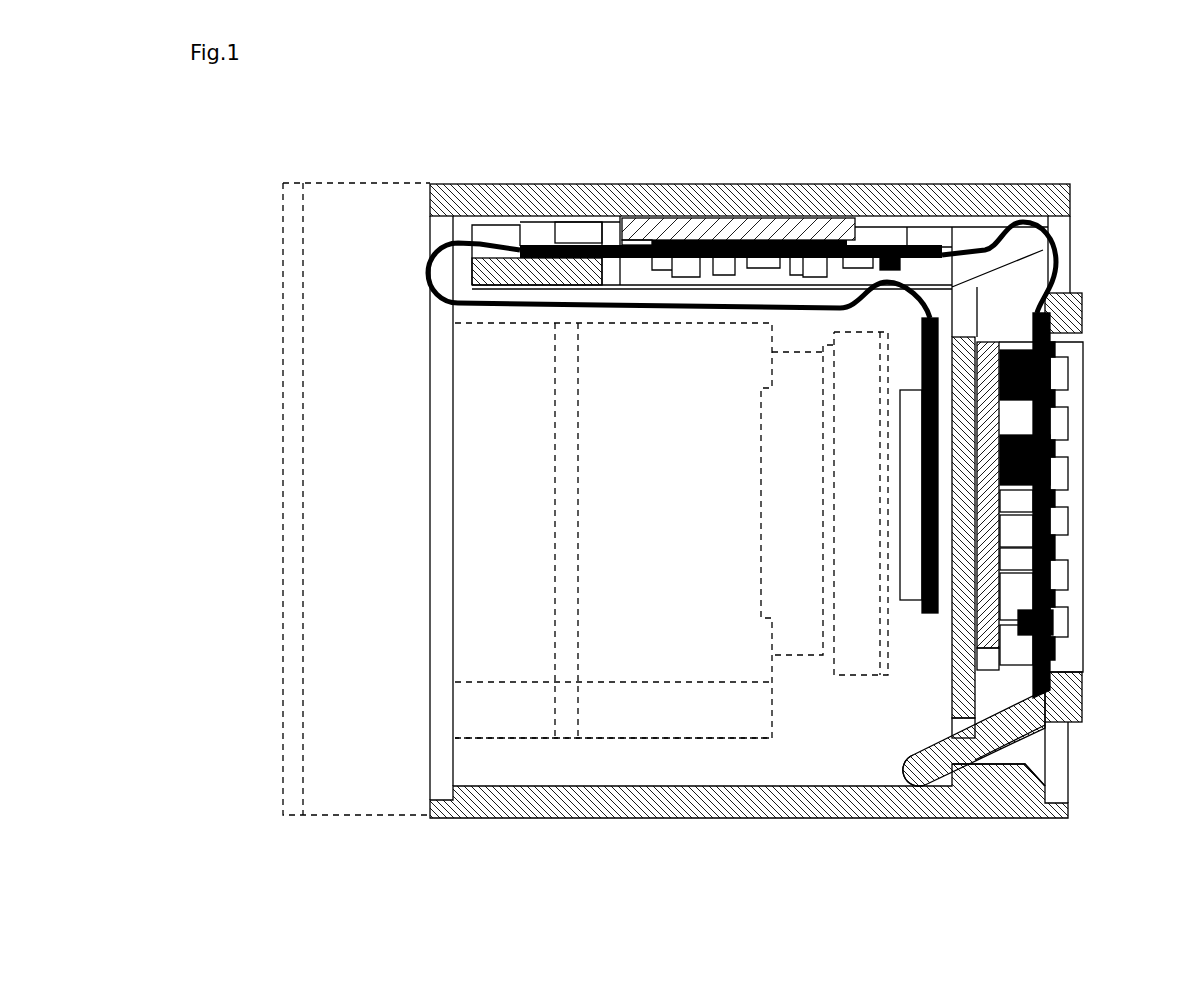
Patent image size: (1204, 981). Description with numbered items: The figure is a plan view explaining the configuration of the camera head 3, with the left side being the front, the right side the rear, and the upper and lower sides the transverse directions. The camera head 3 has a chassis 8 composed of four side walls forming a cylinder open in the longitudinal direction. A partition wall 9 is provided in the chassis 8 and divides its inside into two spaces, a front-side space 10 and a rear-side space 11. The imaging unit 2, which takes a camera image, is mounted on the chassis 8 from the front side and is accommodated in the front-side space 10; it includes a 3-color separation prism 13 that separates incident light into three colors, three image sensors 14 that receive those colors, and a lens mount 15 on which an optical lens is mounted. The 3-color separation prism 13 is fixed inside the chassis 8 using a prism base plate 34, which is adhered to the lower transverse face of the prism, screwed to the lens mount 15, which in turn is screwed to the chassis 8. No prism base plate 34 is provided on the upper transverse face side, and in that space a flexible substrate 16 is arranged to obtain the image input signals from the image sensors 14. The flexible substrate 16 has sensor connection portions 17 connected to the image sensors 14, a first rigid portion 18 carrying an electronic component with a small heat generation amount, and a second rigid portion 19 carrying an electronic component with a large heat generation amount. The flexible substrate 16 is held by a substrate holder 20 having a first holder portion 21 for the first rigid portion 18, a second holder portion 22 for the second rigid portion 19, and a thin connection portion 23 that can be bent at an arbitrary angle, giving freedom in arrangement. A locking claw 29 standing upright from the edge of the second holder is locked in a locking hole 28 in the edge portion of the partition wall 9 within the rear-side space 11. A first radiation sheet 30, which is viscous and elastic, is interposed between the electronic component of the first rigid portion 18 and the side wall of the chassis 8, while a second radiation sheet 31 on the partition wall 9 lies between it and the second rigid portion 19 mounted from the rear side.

The imaging unit 2 is at (497, 745).
The camera head 3 is at (888, 125).
The chassis 8 is at (838, 182).
The partition wall 9 is at (952, 693).
The front-side space 10 is at (697, 768).
The rear-side space 11 is at (1025, 750).
The 3-color separation prism 13 is at (622, 668).
The image sensors 14 is at (838, 672).
The lens mount 15 is at (378, 805).
The flexible substrate 16 is at (977, 236).
The sensor connection portions 17 is at (922, 497).
The first rigid portion 18 is at (618, 260).
The second rigid portion 19 is at (1047, 650).
The substrate holder 20 is at (500, 225).
The first holder portion 21 is at (578, 233).
The second holder portion 22 is at (1075, 398).
The connection portion 23 is at (1045, 237).
The locking hole 28 is at (952, 730).
The locking claw 29 is at (905, 760).
The first radiation sheet 30 is at (738, 222).
The second radiation sheet 31 is at (1017, 740).
The prism base plate 34 is at (668, 722).